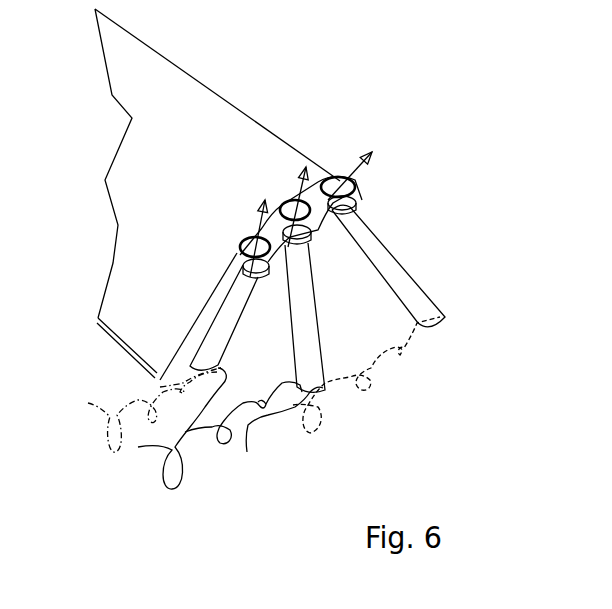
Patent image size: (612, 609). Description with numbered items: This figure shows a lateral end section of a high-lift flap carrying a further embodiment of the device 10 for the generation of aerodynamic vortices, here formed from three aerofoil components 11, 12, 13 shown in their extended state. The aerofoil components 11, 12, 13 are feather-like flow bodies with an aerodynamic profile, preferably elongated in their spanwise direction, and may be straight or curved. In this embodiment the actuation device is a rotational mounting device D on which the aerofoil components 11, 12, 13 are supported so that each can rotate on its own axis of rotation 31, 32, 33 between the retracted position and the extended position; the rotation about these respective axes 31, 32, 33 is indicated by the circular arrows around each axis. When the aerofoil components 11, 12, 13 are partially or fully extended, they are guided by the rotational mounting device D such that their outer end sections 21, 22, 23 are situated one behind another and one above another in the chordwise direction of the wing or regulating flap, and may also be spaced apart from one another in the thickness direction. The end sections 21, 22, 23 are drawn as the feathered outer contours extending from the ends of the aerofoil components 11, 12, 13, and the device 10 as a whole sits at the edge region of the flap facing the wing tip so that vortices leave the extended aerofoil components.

The device for vortex generation 10 is at (403, 232).
The aerofoil component 11 is at (254, 330).
The aerofoil component 12 is at (331, 330).
The aerofoil component 13 is at (383, 306).
The end section 21 is at (195, 428).
The end section 22 is at (279, 434).
The end section 23 is at (400, 348).
The axis of rotation 31 is at (252, 222).
The axis of rotation 32 is at (299, 192).
The axis of rotation 33 is at (352, 172).
The rotational mounting device D is at (390, 194).